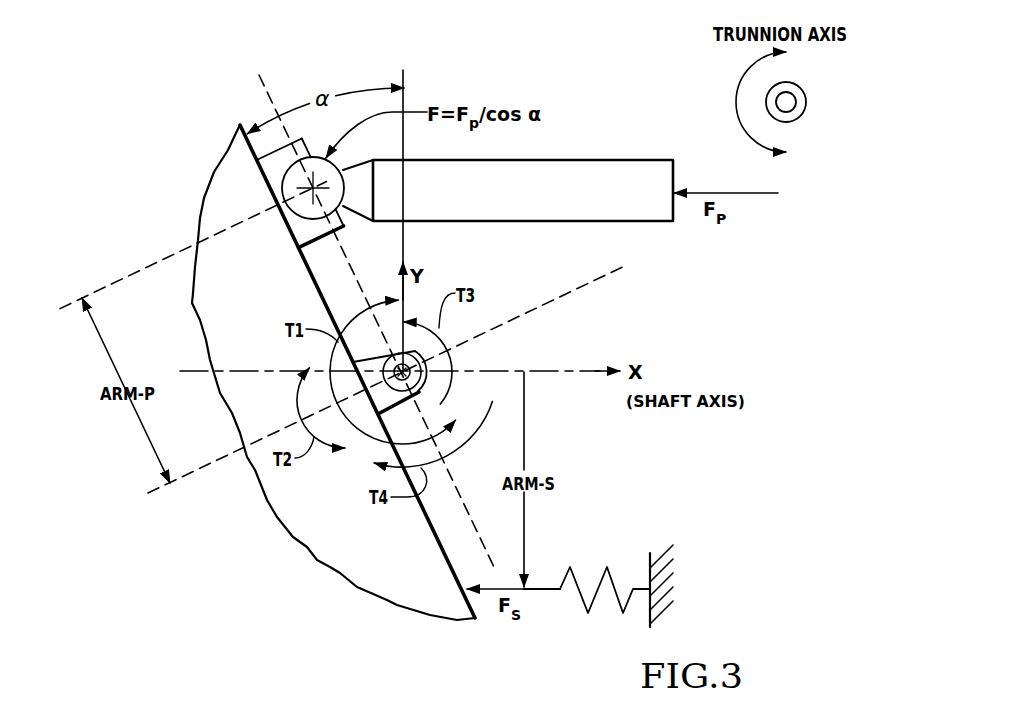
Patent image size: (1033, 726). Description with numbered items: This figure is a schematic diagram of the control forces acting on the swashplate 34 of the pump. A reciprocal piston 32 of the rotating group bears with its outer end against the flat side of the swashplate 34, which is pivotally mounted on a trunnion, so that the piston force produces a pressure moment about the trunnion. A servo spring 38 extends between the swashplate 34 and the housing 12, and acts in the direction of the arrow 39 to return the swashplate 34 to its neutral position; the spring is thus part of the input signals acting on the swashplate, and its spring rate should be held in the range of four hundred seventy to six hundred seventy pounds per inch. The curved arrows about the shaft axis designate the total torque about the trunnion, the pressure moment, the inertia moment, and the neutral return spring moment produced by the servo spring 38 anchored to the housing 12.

The housing 12 is at (650, 558).
The reciprocal piston 32 is at (598, 172).
The swashplate 34 is at (237, 167).
The servo spring 38 is at (598, 578).
The arrow 39 is at (544, 587).